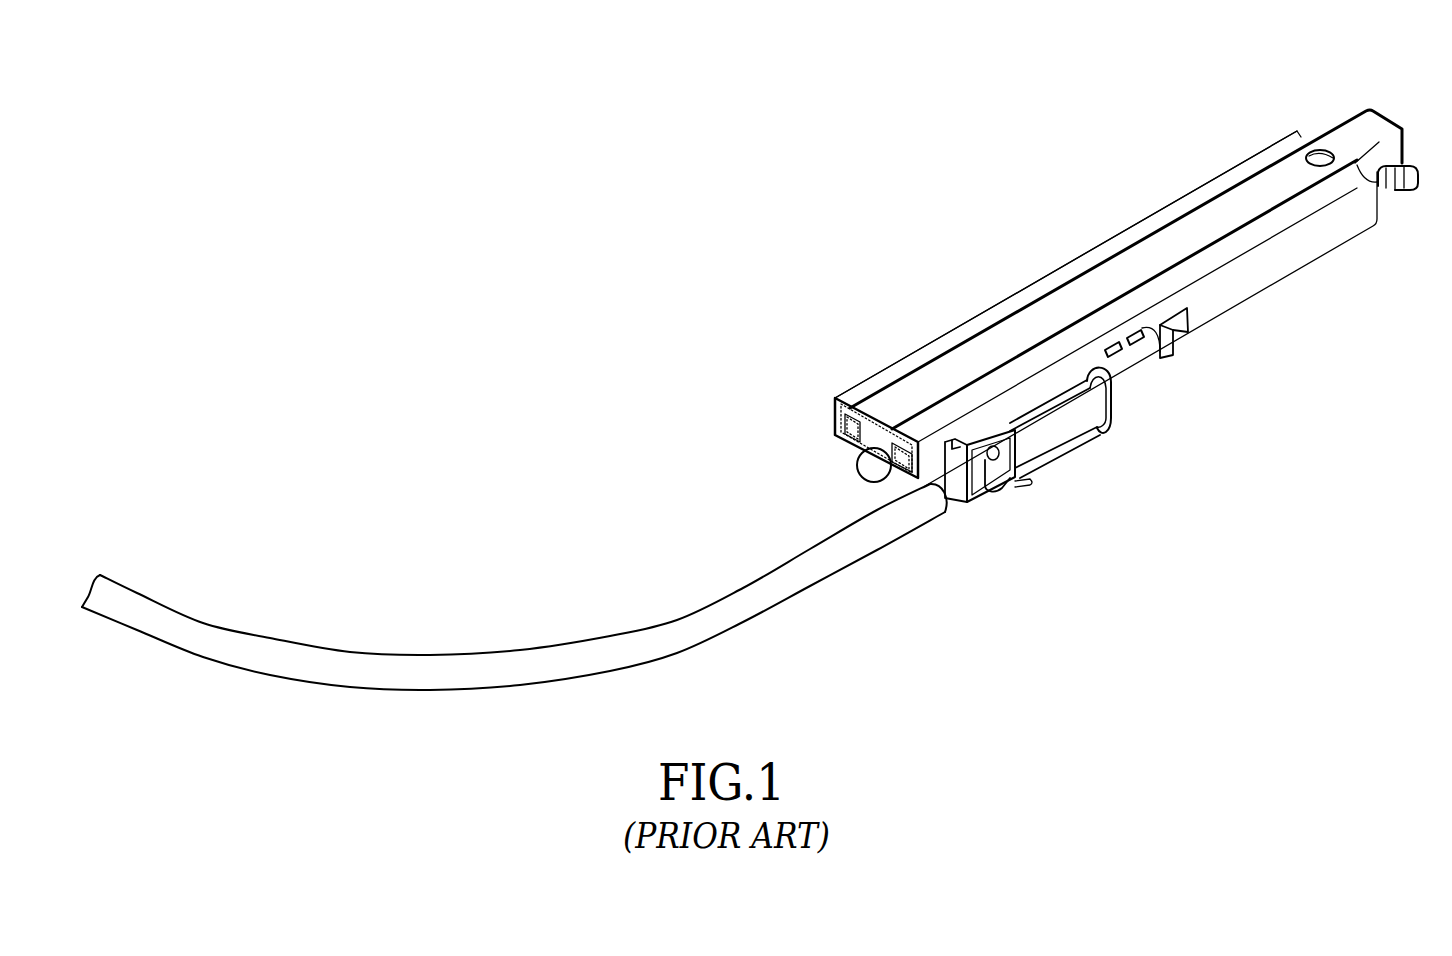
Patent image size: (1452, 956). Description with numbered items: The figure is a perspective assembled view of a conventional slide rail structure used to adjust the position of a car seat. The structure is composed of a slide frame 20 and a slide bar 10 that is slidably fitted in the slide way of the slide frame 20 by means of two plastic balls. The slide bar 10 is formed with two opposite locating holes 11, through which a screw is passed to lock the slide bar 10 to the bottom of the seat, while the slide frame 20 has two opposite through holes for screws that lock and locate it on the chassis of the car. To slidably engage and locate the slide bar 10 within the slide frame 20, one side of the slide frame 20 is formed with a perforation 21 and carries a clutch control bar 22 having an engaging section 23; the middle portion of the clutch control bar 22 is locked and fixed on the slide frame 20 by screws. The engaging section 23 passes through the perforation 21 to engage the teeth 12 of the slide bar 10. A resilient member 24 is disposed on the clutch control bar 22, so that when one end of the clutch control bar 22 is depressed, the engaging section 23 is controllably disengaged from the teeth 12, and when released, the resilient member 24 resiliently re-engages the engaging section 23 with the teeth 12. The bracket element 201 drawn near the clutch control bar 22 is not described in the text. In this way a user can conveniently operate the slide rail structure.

The slide bar 10 is at (1143, 255).
The locating hole 11 is at (1321, 150).
The teeth 12 is at (1388, 188).
The slide frame 20 is at (1030, 292).
The perforation 21 is at (1100, 362).
The clutch control bar 22 is at (1083, 405).
The engaging section 23 is at (1166, 358).
The resilient member 24 is at (1053, 458).
The mounting bracket 201 is at (975, 506).